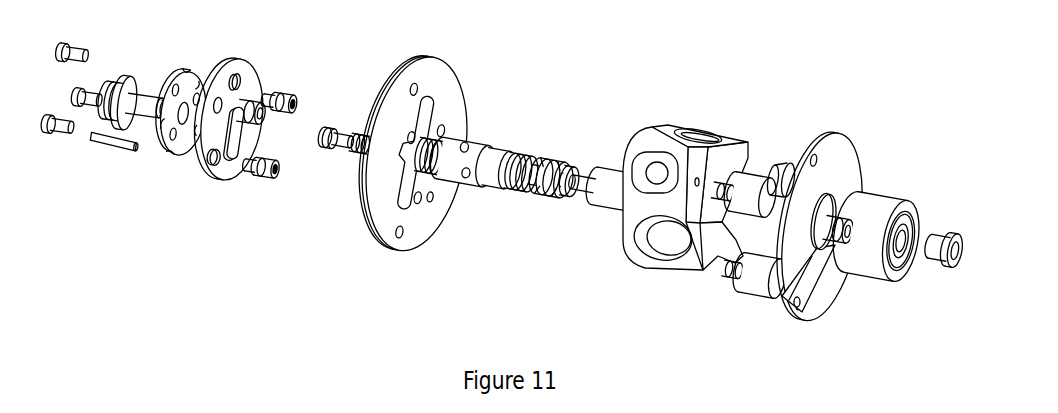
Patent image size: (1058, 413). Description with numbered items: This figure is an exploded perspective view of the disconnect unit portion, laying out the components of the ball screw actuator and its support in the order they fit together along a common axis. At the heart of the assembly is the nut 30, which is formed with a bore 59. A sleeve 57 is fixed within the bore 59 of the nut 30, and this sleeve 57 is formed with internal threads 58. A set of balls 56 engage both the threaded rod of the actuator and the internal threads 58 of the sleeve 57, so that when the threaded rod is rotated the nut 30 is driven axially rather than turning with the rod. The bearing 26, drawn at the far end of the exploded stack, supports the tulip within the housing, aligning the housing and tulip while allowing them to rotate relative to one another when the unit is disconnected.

The bearing 26 is at (878, 197).
The nut 30 is at (658, 137).
The balls 56 is at (562, 166).
The sleeve 57 is at (481, 146).
The internal threads 58 is at (528, 197).
The bore 59 is at (737, 217).